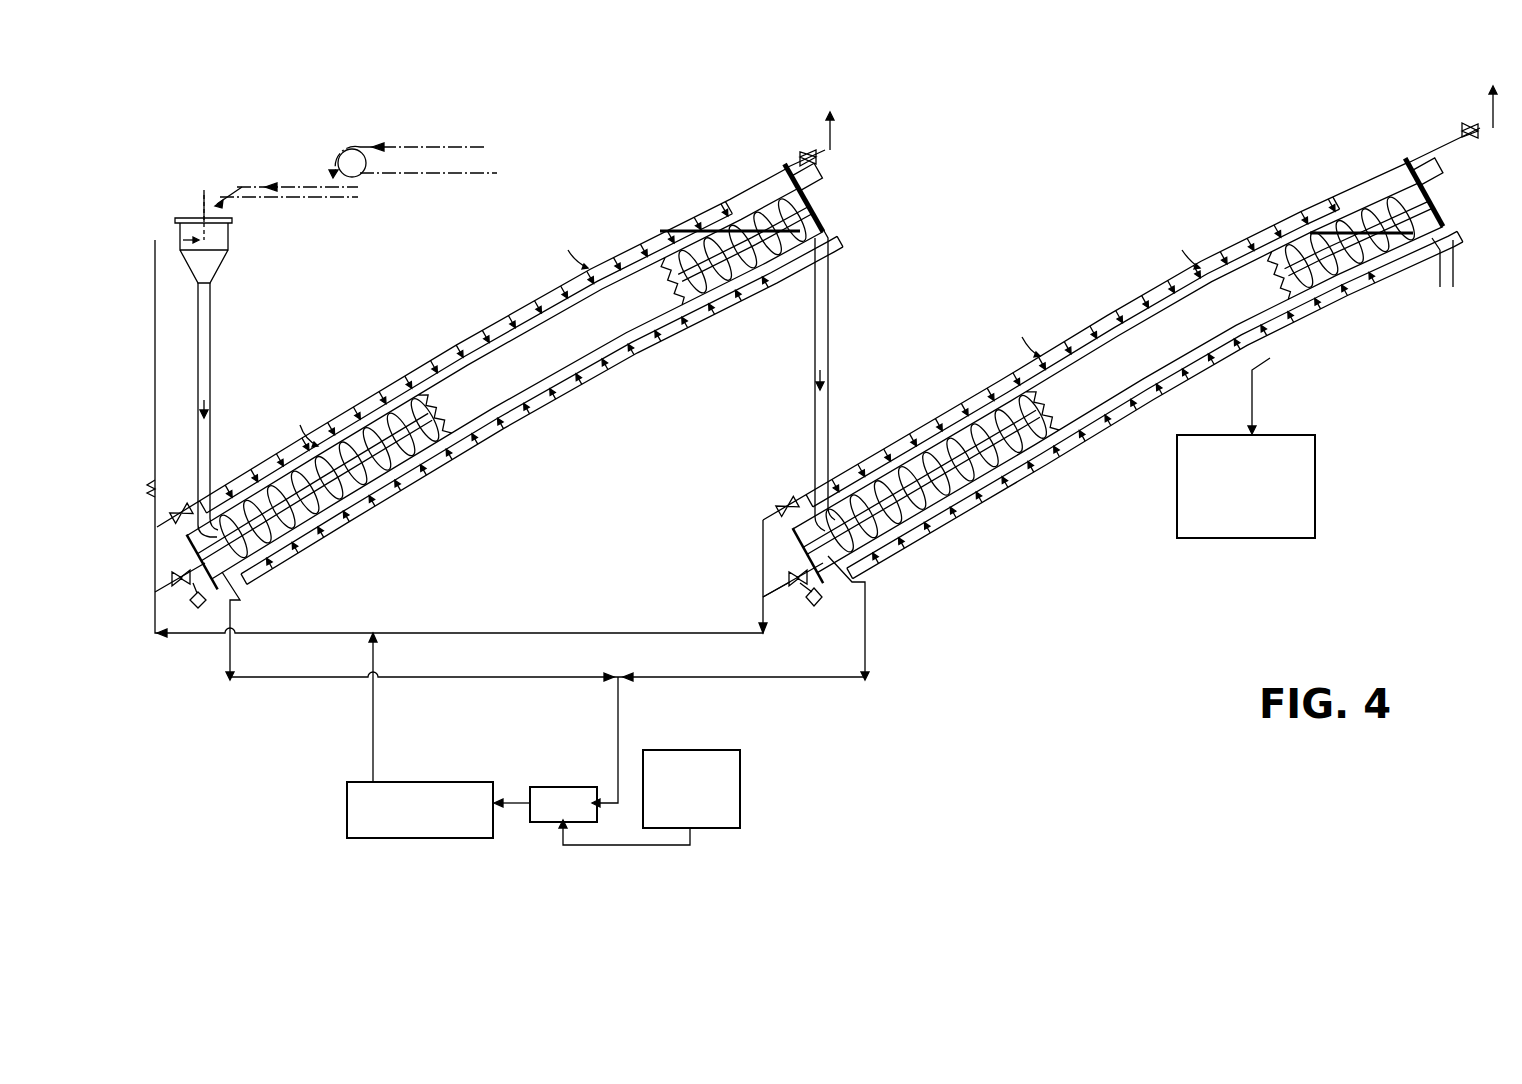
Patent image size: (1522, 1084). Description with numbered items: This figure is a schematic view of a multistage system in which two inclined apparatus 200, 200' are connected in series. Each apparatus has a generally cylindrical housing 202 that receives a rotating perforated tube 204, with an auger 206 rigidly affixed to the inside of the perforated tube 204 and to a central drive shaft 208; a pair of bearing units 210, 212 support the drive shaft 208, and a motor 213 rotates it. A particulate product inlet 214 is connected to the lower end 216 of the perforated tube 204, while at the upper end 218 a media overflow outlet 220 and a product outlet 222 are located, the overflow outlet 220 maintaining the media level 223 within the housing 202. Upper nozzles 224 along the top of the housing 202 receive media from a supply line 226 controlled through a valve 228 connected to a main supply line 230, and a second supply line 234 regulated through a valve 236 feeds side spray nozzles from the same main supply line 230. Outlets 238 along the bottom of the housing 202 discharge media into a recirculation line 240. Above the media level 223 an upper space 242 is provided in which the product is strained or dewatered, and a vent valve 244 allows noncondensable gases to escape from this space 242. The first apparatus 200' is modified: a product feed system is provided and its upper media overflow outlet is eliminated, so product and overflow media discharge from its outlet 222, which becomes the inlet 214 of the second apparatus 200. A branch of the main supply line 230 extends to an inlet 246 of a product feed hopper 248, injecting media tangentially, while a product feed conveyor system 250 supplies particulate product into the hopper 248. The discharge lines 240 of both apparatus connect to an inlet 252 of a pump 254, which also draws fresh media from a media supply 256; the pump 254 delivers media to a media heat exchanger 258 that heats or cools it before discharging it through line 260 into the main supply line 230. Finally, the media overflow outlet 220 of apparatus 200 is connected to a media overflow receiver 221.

The apparatus 200 is at (1228, 198).
The apparatus 200' is at (650, 172).
The housing 202 is at (455, 352).
The perforated tube 204 is at (392, 405).
The auger 206 is at (372, 500).
The drive shaft 208 is at (295, 548).
The bearing unit 210 is at (240, 600).
The bearing unit 212 is at (818, 185).
The motor 213 is at (197, 610).
The particulate product inlet 214 is at (212, 432).
The lower end 216 is at (262, 580).
The upper end 218 is at (800, 170).
The media overflow outlet 220 is at (1360, 322).
The media overflow receiver 221 is at (1320, 492).
The product outlet 222 is at (1455, 270).
The media level 223 is at (750, 208).
The upper nozzles 224 is at (740, 336).
The supply line 226 is at (528, 290).
The valve 228 is at (185, 508).
The main supply line 230 is at (212, 350).
The supply line 234 is at (800, 570).
The valve 236 is at (790, 580).
The outlets 238 is at (724, 305).
The recirculation line 240 is at (565, 393).
The upper space 242 is at (770, 160).
The vent valve 244 is at (828, 160).
The inlet 246 is at (157, 238).
The product feed hopper 248 is at (232, 243).
The product feed conveyor system 250 is at (427, 147).
The inlet 252 is at (620, 712).
The pump 254 is at (563, 785).
The media supply 256 is at (742, 785).
The media heat exchanger 258 is at (347, 806).
The line 260 is at (372, 745).